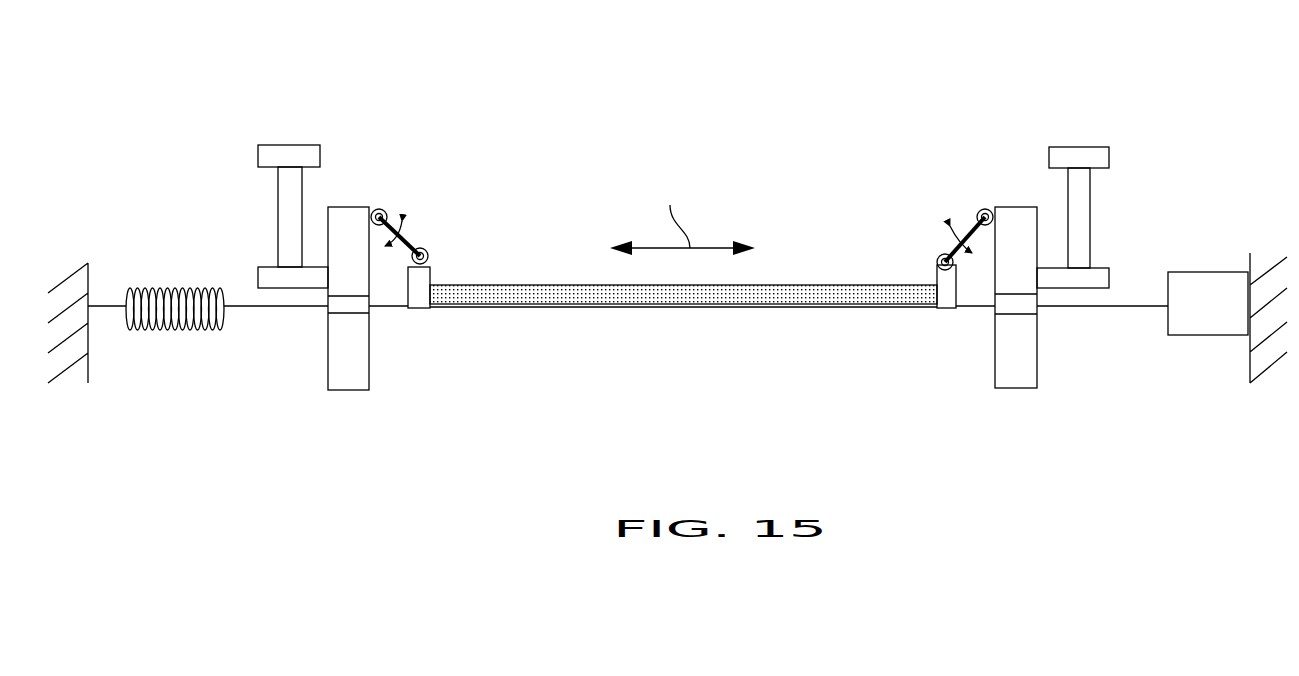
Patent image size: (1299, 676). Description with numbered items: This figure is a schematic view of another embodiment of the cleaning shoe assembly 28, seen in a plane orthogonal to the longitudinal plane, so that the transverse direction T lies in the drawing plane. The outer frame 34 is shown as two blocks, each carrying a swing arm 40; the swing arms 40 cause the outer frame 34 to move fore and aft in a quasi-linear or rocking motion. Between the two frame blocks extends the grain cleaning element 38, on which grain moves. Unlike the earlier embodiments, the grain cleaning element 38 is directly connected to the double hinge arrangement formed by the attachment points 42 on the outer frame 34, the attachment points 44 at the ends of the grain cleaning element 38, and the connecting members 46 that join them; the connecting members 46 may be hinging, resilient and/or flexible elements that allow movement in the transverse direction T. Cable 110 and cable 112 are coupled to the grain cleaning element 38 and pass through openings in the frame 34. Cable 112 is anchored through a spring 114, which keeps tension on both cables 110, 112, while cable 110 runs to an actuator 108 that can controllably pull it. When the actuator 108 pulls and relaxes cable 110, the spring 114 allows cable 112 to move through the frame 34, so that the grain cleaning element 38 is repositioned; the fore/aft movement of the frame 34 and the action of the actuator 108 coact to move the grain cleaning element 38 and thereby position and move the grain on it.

The cleaning shoe assembly 28 is at (288, 84).
The outer frame 34 is at (350, 207).
The grain cleaning element 38 is at (775, 285).
The swing arms 40 is at (277, 218).
The attachment points 42 is at (382, 210).
The attachment points 44 is at (428, 253).
The connecting members 46 is at (422, 248).
The actuator 108 is at (1198, 272).
The cable 110 is at (1080, 308).
The cable 112 is at (263, 306).
The spring 114 is at (165, 332).